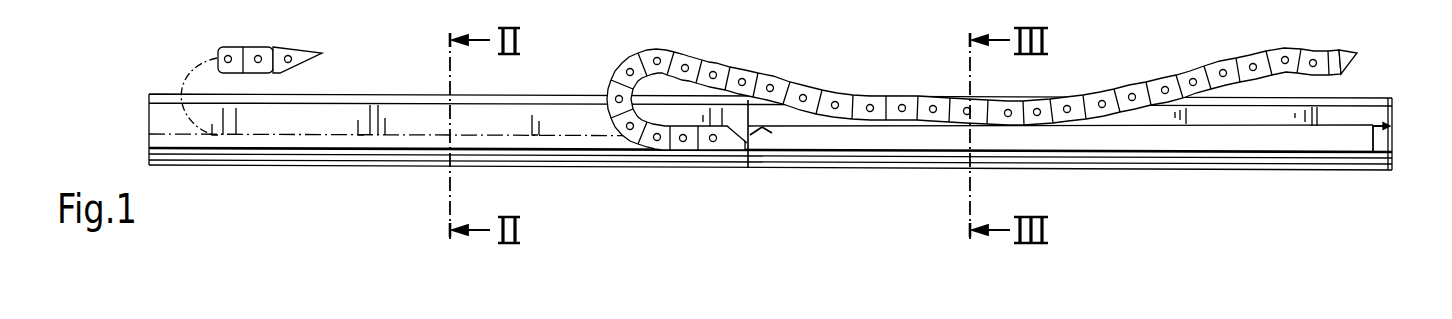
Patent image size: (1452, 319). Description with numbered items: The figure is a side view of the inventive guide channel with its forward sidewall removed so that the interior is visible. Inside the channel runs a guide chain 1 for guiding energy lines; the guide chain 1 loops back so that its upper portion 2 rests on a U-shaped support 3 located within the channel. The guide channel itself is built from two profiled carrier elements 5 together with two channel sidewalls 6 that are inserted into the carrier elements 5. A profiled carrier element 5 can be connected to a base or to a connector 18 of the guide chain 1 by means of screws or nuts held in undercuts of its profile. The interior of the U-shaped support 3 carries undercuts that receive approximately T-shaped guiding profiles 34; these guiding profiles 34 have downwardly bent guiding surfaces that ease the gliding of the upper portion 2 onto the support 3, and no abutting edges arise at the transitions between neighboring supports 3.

The guide chain 1 is at (800, 120).
The upper portion 2 is at (1138, 82).
The support 3 is at (770, 138).
The profiled carrier element 5 is at (247, 185).
The channel sidewall 6 is at (372, 115).
The connector 18 is at (732, 143).
The guiding profile 34 is at (776, 139).